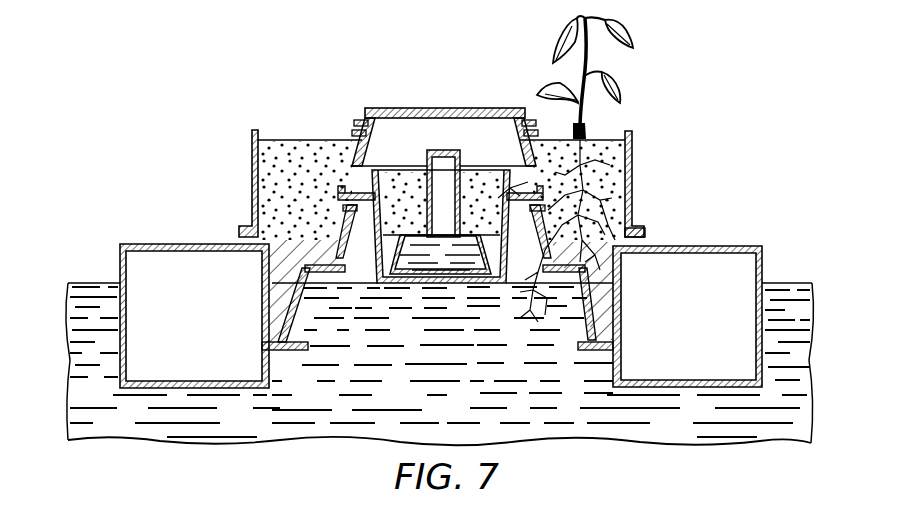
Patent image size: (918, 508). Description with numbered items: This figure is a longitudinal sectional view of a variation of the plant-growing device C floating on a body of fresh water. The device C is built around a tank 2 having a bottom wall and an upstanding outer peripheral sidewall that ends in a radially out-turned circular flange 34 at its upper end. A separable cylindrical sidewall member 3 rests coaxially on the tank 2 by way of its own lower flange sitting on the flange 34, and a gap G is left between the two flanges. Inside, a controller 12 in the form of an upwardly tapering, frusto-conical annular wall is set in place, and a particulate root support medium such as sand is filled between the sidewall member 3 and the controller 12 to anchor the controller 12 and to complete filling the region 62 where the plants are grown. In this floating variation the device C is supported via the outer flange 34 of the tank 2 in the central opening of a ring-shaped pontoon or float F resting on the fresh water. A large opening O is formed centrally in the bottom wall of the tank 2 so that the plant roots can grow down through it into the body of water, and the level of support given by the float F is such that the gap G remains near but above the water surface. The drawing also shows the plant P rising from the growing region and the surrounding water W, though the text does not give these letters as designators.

The tank 2 is at (277, 350).
The cylindrical sidewall member 3 is at (626, 158).
The controller 12 is at (354, 140).
The radially out-turned circular flange 34 is at (643, 242).
The region 62 is at (580, 322).
The float F is at (763, 265).
The gap G is at (242, 236).
The opening O is at (582, 327).
The water W is at (440, 364).
The plant-growing device C is at (440, 216).
The plant P is at (565, 169).